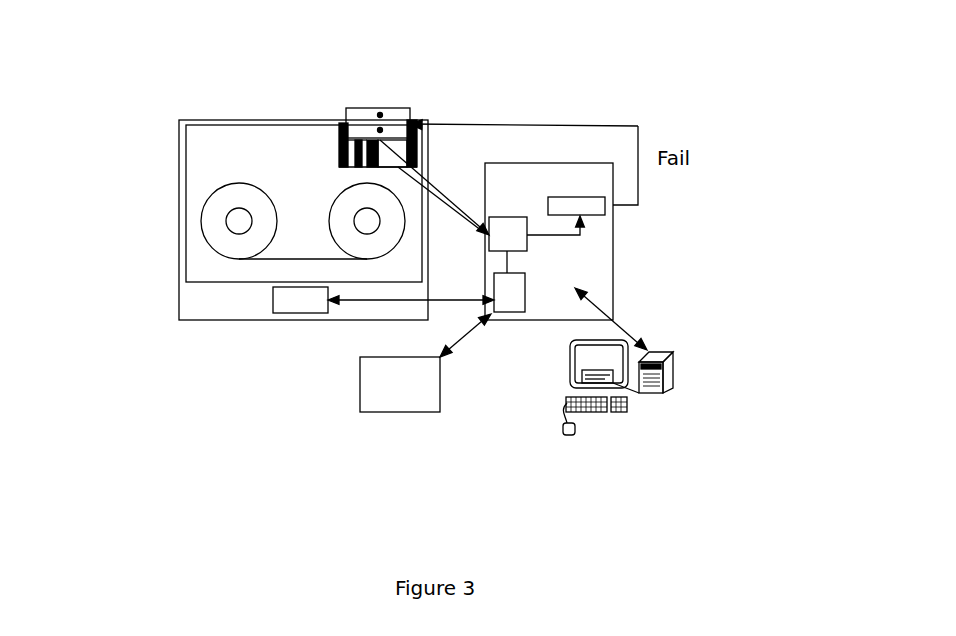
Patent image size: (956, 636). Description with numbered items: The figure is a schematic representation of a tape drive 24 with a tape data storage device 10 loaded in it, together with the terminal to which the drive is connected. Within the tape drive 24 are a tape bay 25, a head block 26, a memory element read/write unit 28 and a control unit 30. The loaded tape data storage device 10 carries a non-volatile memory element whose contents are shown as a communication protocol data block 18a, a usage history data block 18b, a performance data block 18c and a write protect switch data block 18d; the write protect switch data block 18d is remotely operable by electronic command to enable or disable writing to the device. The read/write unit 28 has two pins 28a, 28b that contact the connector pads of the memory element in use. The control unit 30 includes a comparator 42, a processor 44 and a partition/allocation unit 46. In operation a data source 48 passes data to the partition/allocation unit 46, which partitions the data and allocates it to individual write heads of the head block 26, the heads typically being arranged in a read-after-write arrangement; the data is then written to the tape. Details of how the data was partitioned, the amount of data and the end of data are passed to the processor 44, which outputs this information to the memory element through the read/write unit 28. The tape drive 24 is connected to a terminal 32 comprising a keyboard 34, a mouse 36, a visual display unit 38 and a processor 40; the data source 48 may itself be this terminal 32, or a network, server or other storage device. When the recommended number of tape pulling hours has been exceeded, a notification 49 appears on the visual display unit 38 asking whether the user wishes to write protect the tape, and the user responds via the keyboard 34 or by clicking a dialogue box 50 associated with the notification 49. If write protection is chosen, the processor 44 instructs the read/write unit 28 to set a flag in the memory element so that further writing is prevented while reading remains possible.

The tape data storage device 10 is at (222, 164).
The communication protocol data block 18a is at (340, 128).
The usage history data block 18b is at (340, 152).
The performance data block 18c is at (362, 150).
The write protect switch data block 18d is at (417, 140).
The tape drive 24 is at (157, 312).
The tape bay 25 is at (227, 303).
The head block 26 is at (302, 313).
The memory element read/write unit 28 is at (367, 117).
The pin 28a is at (380, 113).
The pin 28b is at (382, 129).
The control unit 30 is at (656, 263).
The terminal 32 is at (700, 396).
The keyboard 34 is at (608, 413).
The mouse 36 is at (568, 434).
The visual display unit 38 is at (570, 377).
The processor 40 is at (639, 441).
The comparator 42 is at (588, 213).
The processor 44 is at (523, 227).
The partition/allocation unit 46 is at (527, 283).
The data source 48 is at (392, 395).
The notification 49 is at (593, 353).
The dialogue box 50 is at (640, 393).